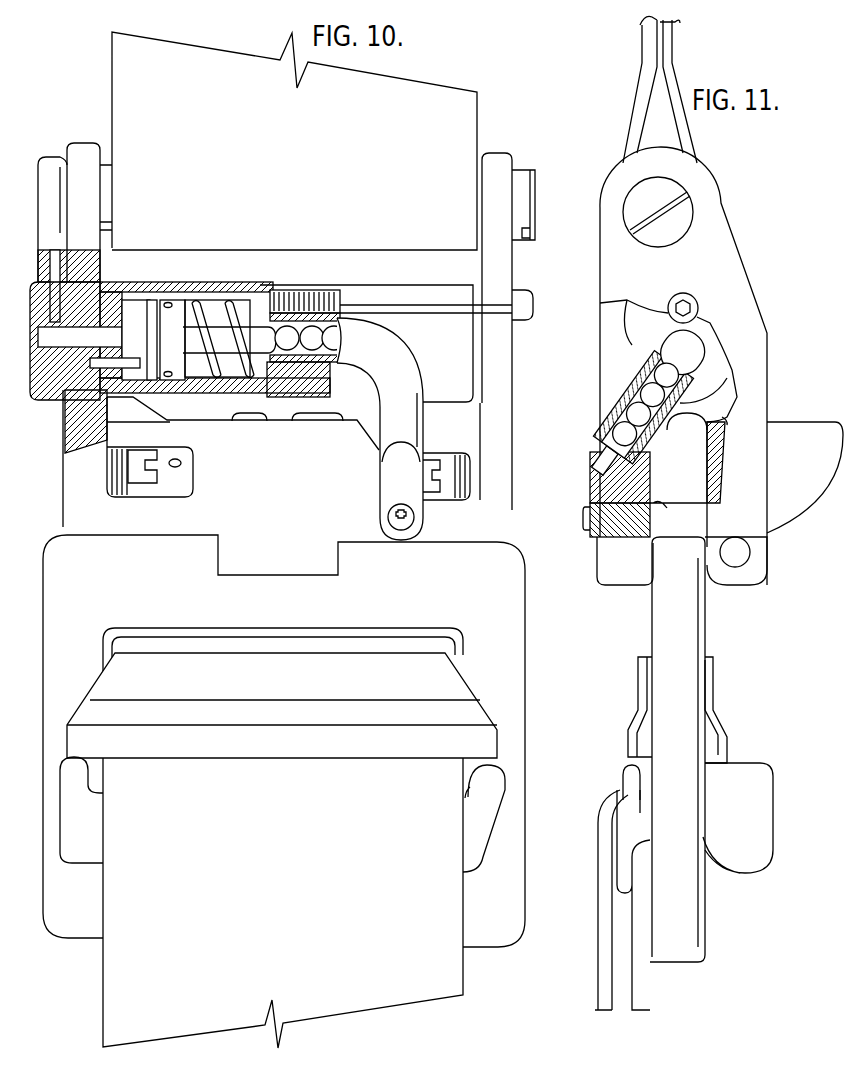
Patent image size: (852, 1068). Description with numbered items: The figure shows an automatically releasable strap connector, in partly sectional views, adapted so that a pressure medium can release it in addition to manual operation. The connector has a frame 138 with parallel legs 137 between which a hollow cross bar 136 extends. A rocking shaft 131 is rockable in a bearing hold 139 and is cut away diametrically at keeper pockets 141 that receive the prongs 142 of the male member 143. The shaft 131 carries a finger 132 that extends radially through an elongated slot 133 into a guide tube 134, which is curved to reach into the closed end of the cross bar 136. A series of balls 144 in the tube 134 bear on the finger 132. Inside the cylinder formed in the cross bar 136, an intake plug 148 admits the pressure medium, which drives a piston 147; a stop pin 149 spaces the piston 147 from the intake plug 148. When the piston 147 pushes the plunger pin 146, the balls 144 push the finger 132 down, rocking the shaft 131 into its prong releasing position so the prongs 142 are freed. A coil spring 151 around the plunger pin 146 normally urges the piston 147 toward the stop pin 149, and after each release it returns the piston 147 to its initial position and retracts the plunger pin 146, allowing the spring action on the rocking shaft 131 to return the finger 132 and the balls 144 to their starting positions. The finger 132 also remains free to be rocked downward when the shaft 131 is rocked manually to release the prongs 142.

In FIG. 10, the rocking shaft 131 is at (173, 442).
In FIG. 11, the rocking shaft 131 is at (598, 540).
In FIG. 11, the finger 132 is at (608, 460).
In FIG. 11, the elongated slot 133 is at (622, 478).
In FIG. 10, the guide tube 134 is at (395, 347).
In FIG. 11, the guide tube 134 is at (627, 403).
In FIG. 10, the cross bar 136 is at (252, 292).
In FIG. 11, the cross bar 136 is at (637, 340).
In FIG. 10, the parallel legs 137 is at (100, 268).
In FIG. 11, the parallel legs 137 is at (600, 268).
In FIG. 10, the frame 138 is at (497, 530).
In FIG. 11, the bearing hold 139 is at (653, 505).
In FIG. 11, the keeper pockets 141 is at (703, 458).
In FIG. 11, the prongs 142 is at (692, 500).
In FIG. 10, the male member 143 is at (513, 660).
In FIG. 11, the male member 143 is at (658, 622).
In FIG. 10, the balls 144 is at (332, 366).
In FIG. 11, the balls 144 is at (640, 380).
In FIG. 10, the plunger pin 146 is at (243, 332).
In FIG. 10, the piston 147 is at (170, 321).
In FIG. 10, the intake plug 148 is at (77, 363).
In FIG. 10, the stop pin 149 is at (108, 395).
In FIG. 10, the coil spring 151 is at (213, 395).